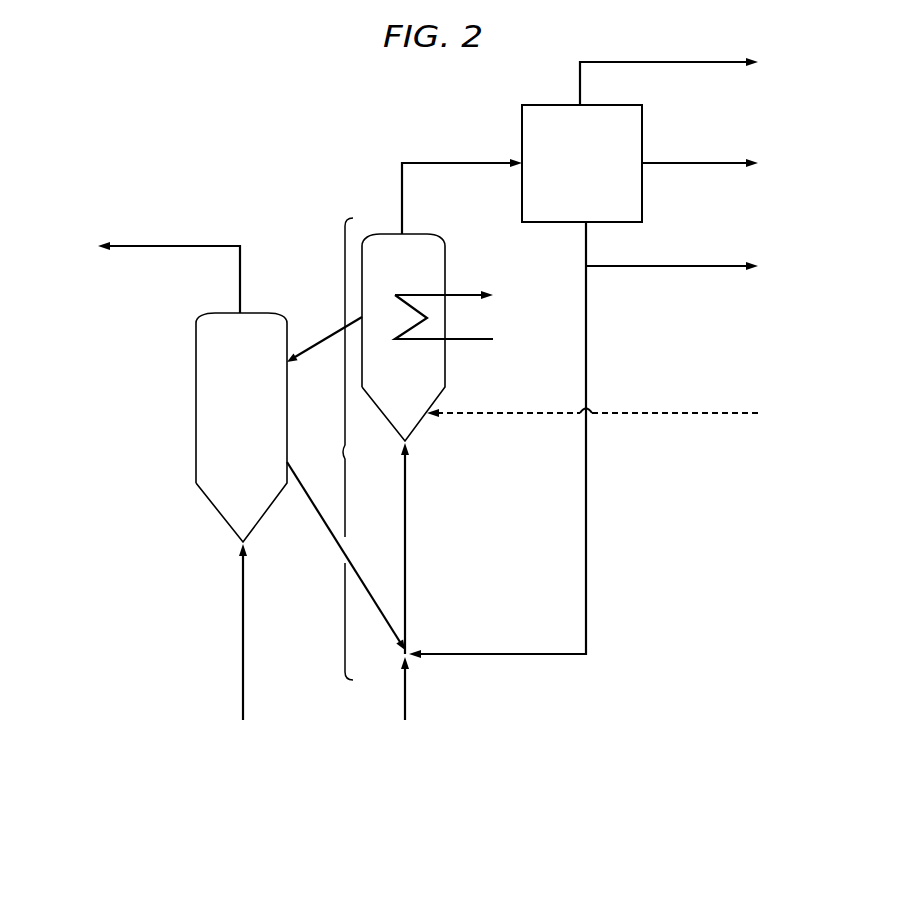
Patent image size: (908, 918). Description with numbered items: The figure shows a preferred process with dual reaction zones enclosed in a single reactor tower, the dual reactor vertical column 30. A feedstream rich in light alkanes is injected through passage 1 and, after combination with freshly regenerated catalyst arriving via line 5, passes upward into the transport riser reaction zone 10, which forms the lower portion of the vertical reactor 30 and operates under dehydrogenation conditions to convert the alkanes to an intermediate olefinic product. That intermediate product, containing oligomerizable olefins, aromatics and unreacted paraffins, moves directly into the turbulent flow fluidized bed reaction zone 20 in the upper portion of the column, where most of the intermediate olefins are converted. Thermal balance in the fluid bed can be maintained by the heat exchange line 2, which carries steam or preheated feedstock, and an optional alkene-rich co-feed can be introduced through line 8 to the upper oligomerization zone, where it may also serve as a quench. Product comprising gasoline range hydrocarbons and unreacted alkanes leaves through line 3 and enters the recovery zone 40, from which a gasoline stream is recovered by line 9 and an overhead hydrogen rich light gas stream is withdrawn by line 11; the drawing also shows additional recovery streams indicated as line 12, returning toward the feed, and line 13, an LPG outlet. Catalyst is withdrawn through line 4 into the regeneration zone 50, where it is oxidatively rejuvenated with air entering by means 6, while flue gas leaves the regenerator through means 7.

The passage 1 is at (407, 697).
The heat exchange line 2 is at (460, 295).
The line 3 is at (403, 198).
The line 4 is at (313, 345).
The line 5 is at (322, 516).
The means 6 is at (244, 604).
The means 7 is at (241, 268).
The line 8 is at (668, 410).
The line 9 is at (682, 163).
The transport riser reaction zone 10 is at (406, 494).
The line 11 is at (682, 62).
The recycle line 12 is at (587, 243).
The LPG product line 13 is at (682, 266).
The turbulent flow fluidized bed reaction zone 20 is at (437, 240).
The dual reactor vertical column 30 is at (343, 452).
The recovery zone 40 is at (540, 105).
The regeneration zone 50 is at (204, 320).